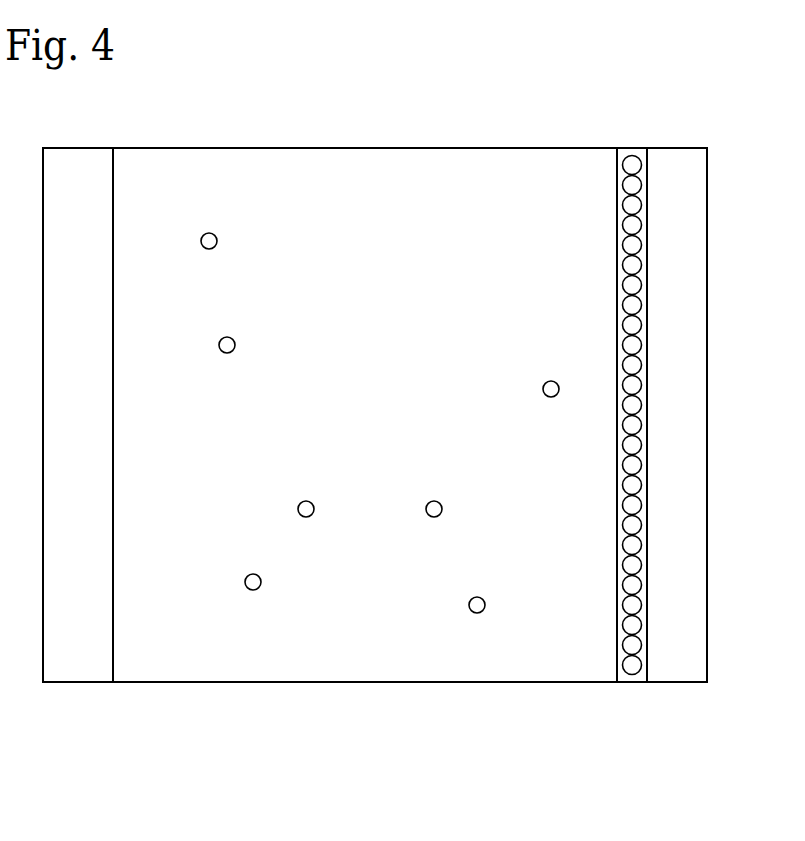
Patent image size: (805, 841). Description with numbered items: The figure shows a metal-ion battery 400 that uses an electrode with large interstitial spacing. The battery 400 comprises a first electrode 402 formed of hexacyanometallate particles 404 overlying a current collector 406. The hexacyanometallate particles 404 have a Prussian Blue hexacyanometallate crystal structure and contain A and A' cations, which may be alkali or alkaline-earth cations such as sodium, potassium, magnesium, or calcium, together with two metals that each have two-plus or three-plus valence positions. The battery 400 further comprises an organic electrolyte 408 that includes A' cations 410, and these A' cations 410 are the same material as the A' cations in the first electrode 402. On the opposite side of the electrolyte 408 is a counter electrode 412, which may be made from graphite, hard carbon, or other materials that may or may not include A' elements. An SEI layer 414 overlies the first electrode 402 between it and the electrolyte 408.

The battery 400 is at (279, 112).
The first electrode 402 is at (708, 186).
The hexacyanometallate particles 404 is at (630, 627).
The current collector 406 is at (698, 427).
The organic electrolyte 408 is at (400, 342).
The A' cations 410 is at (434, 517).
The counter electrode 412 is at (100, 427).
The SEI layer 414 is at (630, 148).